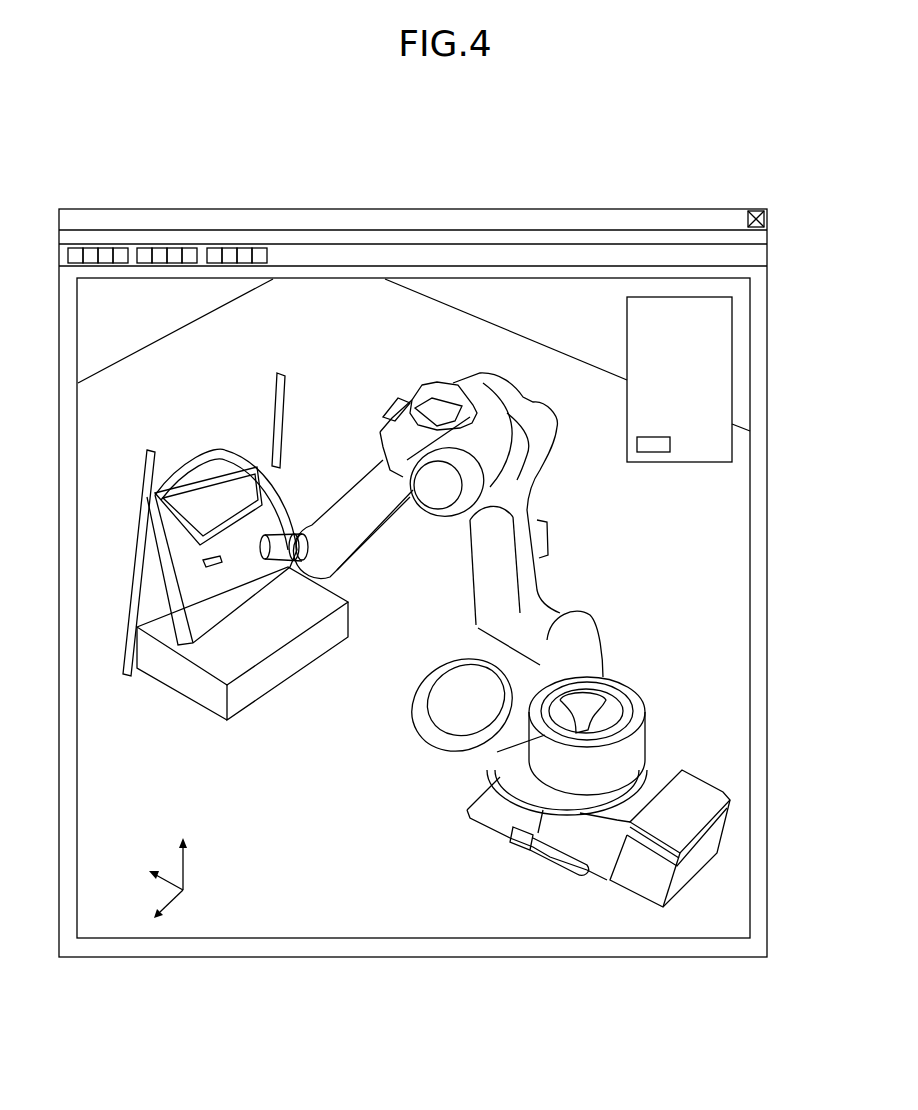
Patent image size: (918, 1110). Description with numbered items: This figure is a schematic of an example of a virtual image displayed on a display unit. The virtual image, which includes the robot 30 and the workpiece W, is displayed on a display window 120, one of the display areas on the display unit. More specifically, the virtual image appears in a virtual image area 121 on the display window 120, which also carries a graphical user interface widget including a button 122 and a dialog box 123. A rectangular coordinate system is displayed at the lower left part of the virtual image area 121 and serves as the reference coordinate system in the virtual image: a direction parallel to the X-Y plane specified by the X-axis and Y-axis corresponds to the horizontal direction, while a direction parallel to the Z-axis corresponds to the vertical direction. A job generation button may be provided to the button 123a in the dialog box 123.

The display window 120 is at (600, 192).
The virtual image area 121 is at (742, 297).
The button 122 is at (48, 247).
The dialog box 123 is at (732, 357).
The button 123a is at (670, 443).
The robot 30 is at (393, 375).
The workpiece W is at (203, 438).